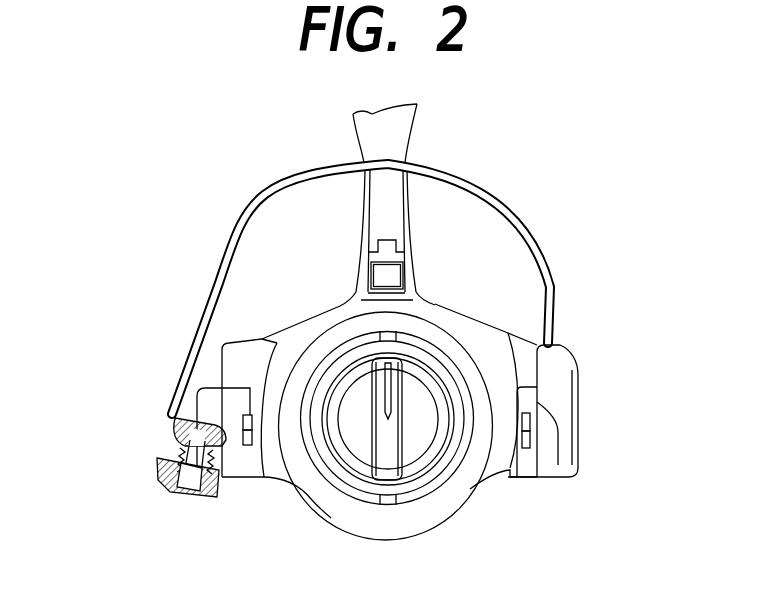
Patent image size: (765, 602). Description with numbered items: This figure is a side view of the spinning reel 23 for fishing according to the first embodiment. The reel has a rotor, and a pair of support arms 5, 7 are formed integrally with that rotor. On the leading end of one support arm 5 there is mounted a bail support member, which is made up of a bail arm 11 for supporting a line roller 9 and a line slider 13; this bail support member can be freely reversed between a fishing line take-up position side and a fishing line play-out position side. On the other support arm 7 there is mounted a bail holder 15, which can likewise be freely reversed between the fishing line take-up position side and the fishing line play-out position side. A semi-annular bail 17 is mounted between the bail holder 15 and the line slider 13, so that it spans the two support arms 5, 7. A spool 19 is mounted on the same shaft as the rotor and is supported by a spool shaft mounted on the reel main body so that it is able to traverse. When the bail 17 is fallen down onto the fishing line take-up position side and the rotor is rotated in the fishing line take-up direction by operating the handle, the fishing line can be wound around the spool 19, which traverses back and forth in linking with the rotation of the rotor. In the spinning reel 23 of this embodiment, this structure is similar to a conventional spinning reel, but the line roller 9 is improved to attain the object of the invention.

The support arm 5 is at (228, 380).
The support arm 7 is at (523, 340).
The line roller 9 is at (168, 446).
The bail arm 11 is at (163, 471).
The line slider 13 is at (173, 417).
The bail holder 15 is at (558, 382).
The semi-annular bail 17 is at (507, 209).
The spool 19 is at (330, 337).
The spinning reel 23 is at (219, 224).